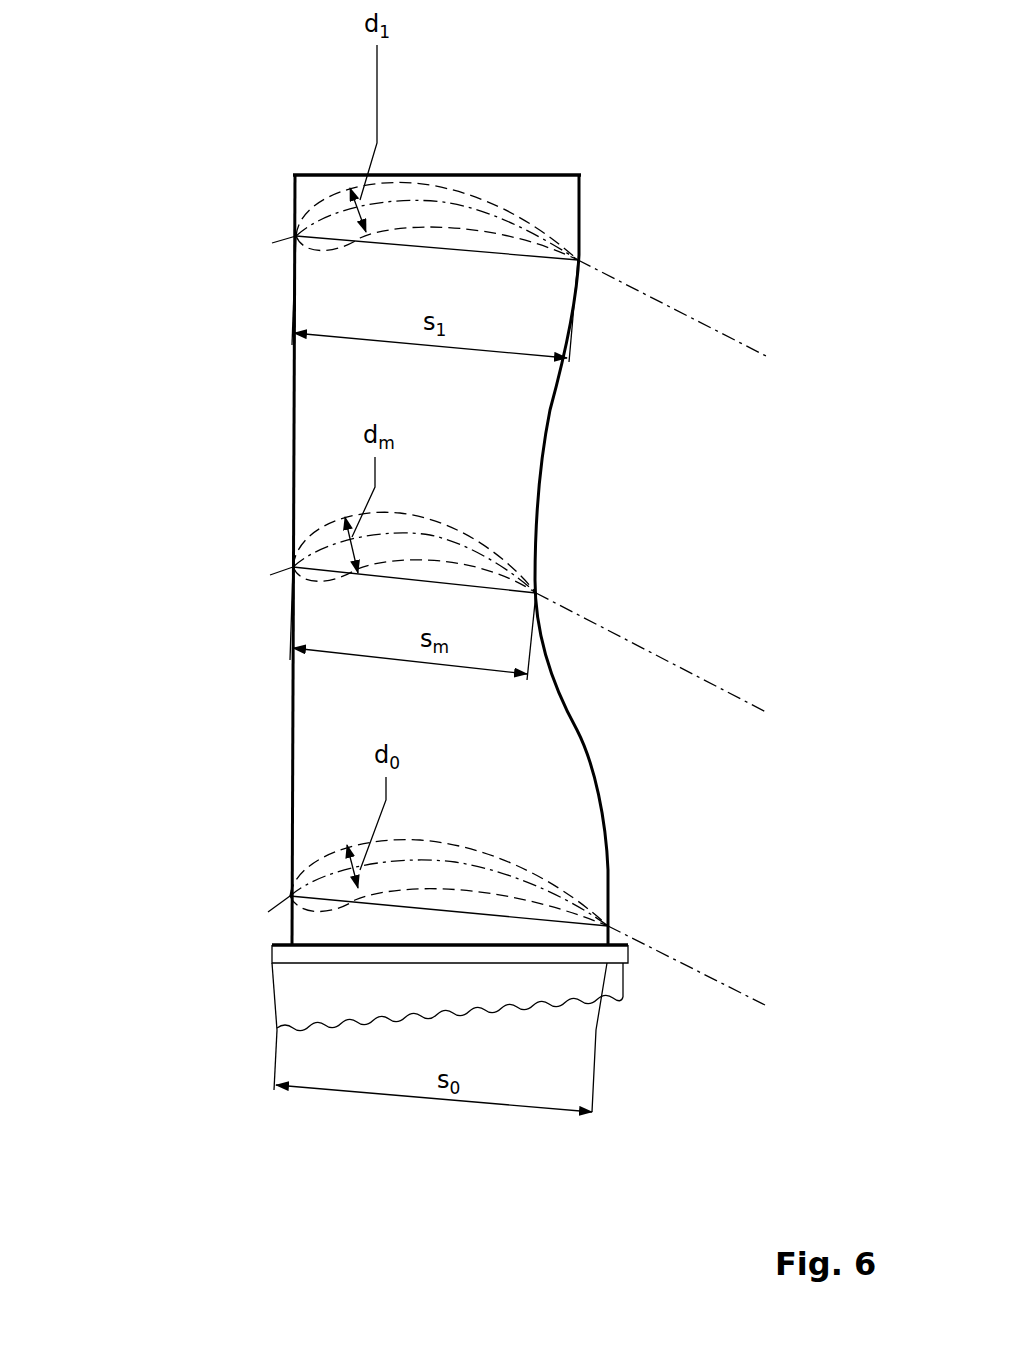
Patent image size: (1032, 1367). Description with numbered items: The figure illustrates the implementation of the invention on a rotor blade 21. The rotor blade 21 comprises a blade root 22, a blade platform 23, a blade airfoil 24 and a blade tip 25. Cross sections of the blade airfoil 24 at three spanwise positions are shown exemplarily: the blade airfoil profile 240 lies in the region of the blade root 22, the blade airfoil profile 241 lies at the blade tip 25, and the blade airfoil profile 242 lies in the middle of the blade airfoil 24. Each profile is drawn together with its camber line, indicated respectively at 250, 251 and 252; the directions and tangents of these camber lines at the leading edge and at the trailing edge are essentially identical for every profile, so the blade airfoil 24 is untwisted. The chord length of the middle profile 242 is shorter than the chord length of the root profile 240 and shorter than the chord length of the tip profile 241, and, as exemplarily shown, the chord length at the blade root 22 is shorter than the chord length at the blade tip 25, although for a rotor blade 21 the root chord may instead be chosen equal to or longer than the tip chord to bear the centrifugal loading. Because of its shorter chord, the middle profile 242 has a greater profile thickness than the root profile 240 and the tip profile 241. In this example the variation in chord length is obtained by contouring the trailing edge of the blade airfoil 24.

The rotor blade 21 is at (331, 476).
The blade root 22 is at (379, 993).
The blade platform 23 is at (545, 953).
The blade airfoil 24 is at (326, 760).
The blade tip 25 is at (473, 175).
The blade airfoil profile in the region of the blade root 240 is at (464, 848).
The blade airfoil profile at the blade tip 241 is at (505, 207).
The blade airfoil profile in the middle of the blade airfoil 242 is at (410, 517).
The hub camber line 250 is at (507, 880).
The tip camber line 251 is at (507, 225).
The mid-span camber line 252 is at (440, 549).